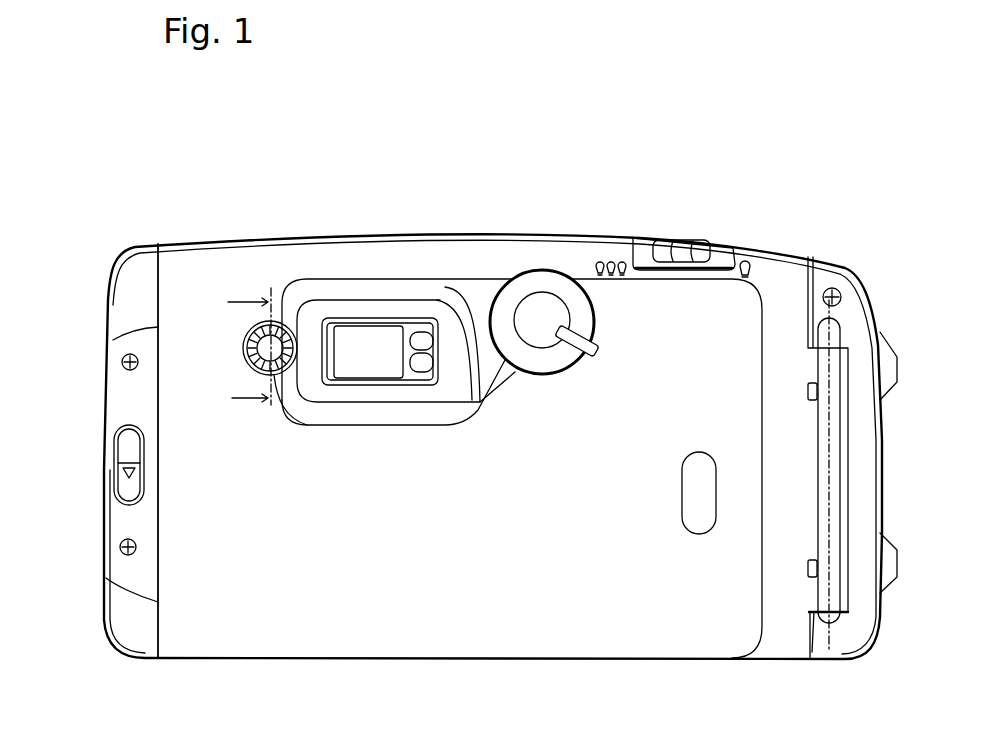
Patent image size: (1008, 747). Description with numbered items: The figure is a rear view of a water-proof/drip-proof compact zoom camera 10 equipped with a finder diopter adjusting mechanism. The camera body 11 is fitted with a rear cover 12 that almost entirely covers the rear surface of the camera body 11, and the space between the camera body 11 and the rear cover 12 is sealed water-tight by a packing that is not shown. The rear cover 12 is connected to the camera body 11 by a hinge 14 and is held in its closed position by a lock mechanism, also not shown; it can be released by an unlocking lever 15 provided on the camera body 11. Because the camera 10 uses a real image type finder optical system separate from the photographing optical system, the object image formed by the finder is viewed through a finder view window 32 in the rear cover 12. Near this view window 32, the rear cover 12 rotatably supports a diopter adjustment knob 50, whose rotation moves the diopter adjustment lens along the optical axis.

The compact zoom camera 10 is at (145, 205).
The camera body 11 is at (852, 310).
The rear cover 12 is at (203, 637).
The hinge 14 is at (833, 420).
The unlocking lever 15 is at (125, 443).
The finder view window 32 is at (373, 347).
The diopter adjustment knob 50 is at (271, 290).